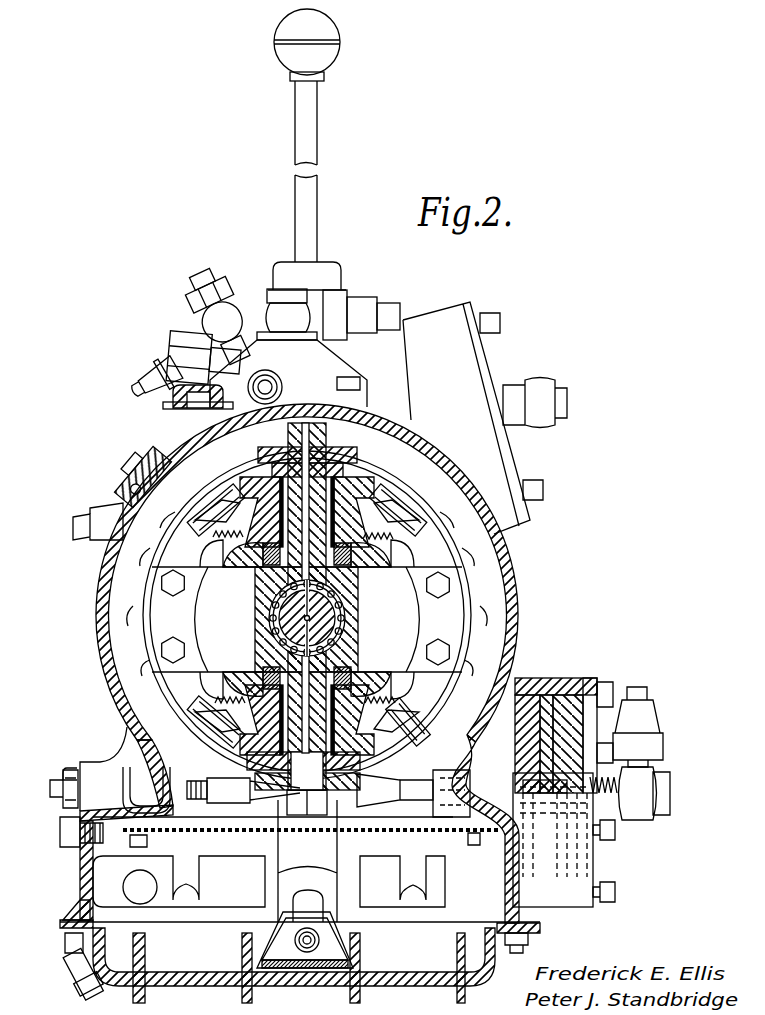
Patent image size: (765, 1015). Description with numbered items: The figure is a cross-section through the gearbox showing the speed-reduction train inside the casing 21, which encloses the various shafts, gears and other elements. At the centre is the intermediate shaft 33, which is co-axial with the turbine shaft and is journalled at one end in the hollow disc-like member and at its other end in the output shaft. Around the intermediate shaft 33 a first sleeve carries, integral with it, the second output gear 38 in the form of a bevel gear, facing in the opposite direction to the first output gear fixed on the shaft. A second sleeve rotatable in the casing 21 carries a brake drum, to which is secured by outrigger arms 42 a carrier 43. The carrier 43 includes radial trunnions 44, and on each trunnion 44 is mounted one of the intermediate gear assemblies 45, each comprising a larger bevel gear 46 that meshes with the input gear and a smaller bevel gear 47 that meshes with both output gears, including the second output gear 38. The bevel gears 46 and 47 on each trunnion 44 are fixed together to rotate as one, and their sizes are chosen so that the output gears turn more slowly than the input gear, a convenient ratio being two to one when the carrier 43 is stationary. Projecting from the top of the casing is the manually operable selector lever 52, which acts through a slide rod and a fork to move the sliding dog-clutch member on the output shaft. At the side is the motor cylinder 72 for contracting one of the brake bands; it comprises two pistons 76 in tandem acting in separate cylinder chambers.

The casing 21 is at (514, 576).
The intermediate shaft 33 is at (275, 600).
The second output gear 38 is at (418, 540).
The outrigger arms 42 is at (413, 627).
The carrier 43 is at (262, 633).
The radial trunnions 44 is at (332, 452).
The intermediate gear assemblies 45 is at (372, 480).
The larger bevel gear 46 is at (405, 500).
The smaller bevel gear 47 is at (247, 503).
The manually operable selector lever 52 is at (303, 208).
The motor cylinder 72 is at (533, 671).
The pistons 76 is at (548, 705).